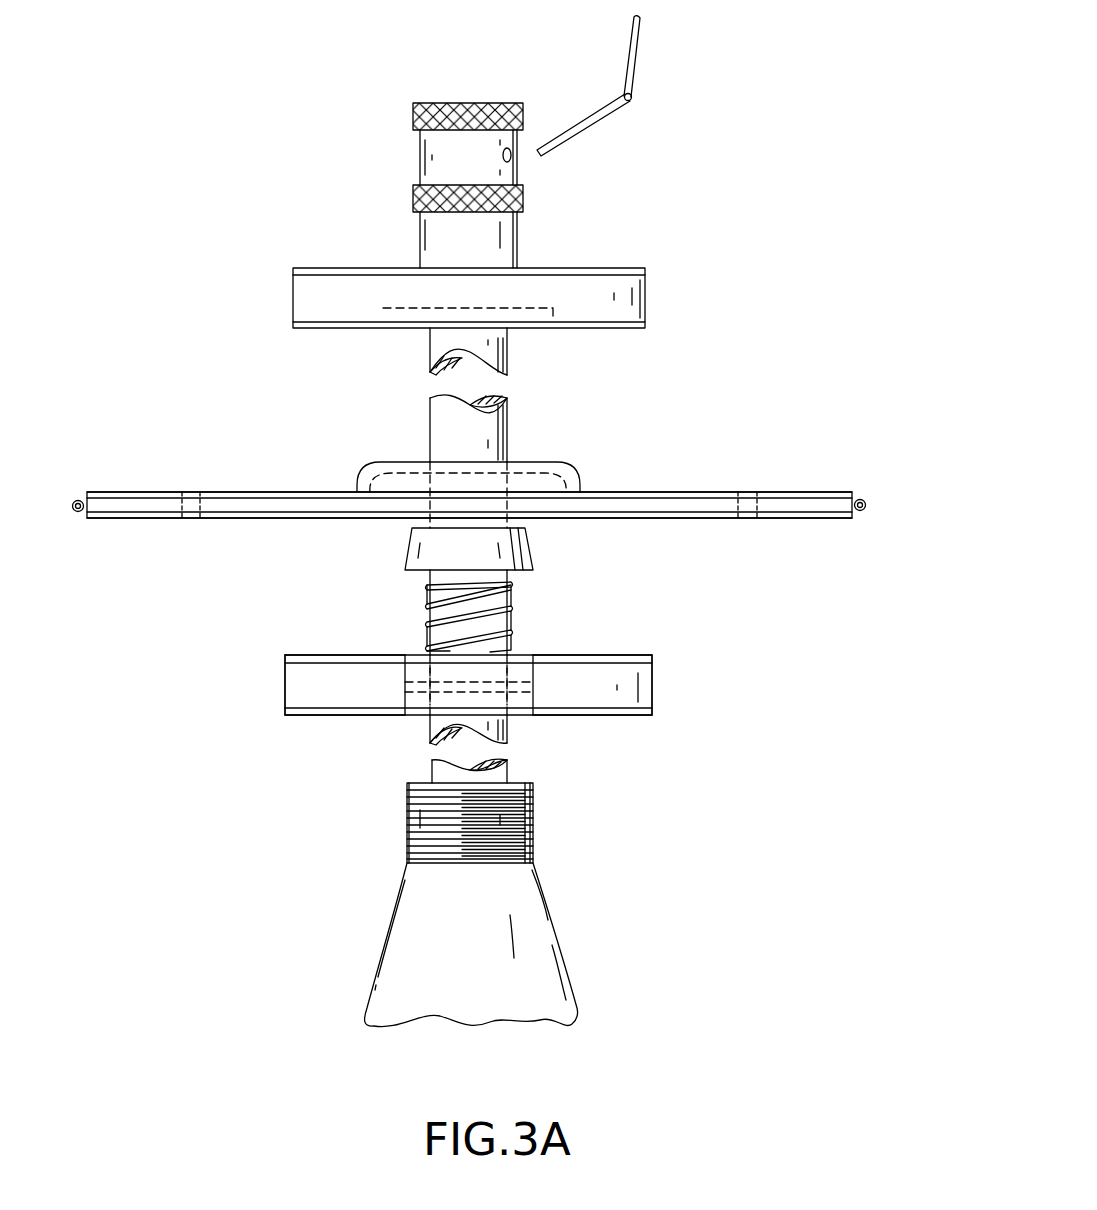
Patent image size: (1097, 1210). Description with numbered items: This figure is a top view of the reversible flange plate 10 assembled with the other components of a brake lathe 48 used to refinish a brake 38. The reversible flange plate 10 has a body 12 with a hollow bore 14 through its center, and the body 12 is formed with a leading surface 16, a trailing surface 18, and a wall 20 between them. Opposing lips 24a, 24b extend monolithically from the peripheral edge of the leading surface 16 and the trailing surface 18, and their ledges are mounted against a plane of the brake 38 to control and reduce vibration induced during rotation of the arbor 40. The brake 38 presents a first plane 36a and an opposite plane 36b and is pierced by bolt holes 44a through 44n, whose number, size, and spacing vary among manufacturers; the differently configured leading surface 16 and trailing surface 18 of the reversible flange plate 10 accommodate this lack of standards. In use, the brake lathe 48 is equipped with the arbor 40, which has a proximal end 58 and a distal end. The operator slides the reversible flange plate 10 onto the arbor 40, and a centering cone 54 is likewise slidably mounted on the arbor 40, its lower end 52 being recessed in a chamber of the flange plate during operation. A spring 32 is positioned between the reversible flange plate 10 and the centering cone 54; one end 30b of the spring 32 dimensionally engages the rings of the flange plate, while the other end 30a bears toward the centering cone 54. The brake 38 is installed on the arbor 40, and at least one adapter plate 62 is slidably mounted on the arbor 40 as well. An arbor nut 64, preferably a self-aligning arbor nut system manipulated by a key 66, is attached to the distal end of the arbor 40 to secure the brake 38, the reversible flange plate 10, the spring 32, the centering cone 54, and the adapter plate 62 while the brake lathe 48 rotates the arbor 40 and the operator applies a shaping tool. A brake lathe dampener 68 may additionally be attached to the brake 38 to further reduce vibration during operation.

The reversible flange plate 10 is at (224, 658).
The body 12 is at (283, 692).
The hollow bore 14 is at (507, 698).
The leading surface 16 is at (630, 653).
The trailing surface 18 is at (327, 720).
The wall 20 is at (655, 700).
The lip 24a is at (330, 655).
The lip 24b is at (600, 713).
The end of spring 30a is at (512, 583).
The end of spring 30b is at (513, 650).
The spring 32 is at (423, 603).
The first plane of brake 36a is at (288, 492).
The second plane of brake 36b is at (270, 513).
The brake 38 is at (833, 490).
The arbor 40 is at (508, 353).
The bolt hole 44a is at (192, 503).
The bolt hole 44n is at (748, 505).
The brake lathe 48 is at (605, 925).
The lower end of centering cone 52 is at (427, 650).
The centering cone 54 is at (532, 550).
The proximal end of arbor 58 is at (432, 773).
The adapter plate 62 is at (647, 297).
The arbor nut 64 is at (524, 192).
The key 66 is at (639, 57).
The brake lathe dampener 68 is at (76, 500).